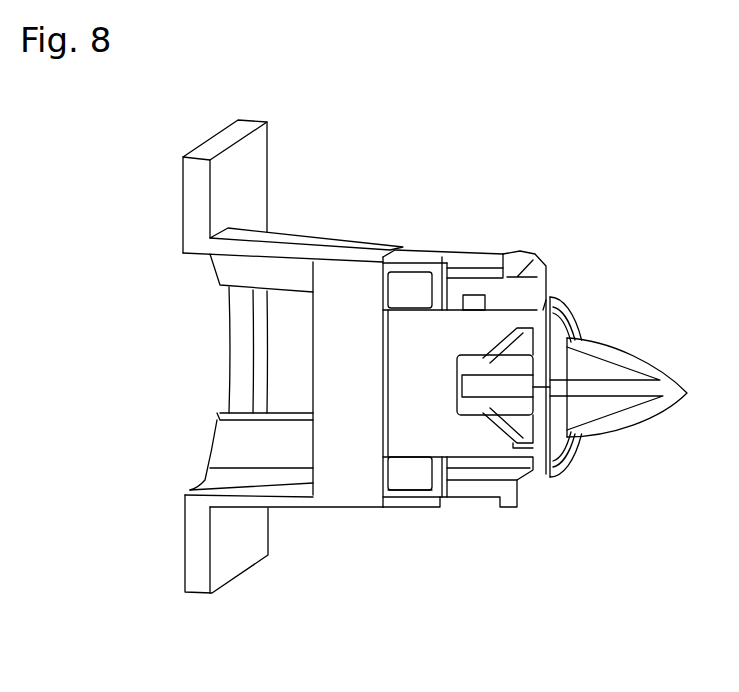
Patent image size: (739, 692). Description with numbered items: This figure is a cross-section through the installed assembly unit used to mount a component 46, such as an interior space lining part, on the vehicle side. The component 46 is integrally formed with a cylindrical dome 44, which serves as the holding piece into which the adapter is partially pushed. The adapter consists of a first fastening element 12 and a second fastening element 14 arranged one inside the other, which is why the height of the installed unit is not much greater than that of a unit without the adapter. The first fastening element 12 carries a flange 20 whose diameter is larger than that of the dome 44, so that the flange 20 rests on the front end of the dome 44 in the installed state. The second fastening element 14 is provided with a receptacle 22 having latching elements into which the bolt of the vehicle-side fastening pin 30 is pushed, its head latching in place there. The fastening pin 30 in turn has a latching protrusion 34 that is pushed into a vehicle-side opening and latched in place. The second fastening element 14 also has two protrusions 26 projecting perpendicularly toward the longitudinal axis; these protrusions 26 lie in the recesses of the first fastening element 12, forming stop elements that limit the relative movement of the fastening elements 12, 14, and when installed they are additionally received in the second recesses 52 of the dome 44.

The first fastening element 12 is at (507, 277).
The second fastening element 14 is at (470, 450).
The flange 20 is at (537, 278).
The receptacle 22 is at (513, 353).
The protrusions 26 is at (403, 267).
The fastening pin 30 is at (557, 472).
The latching protrusion 34 is at (607, 363).
The cylindrical dome 44 is at (285, 240).
The component 46 is at (245, 162).
The second recesses 52 is at (470, 262).